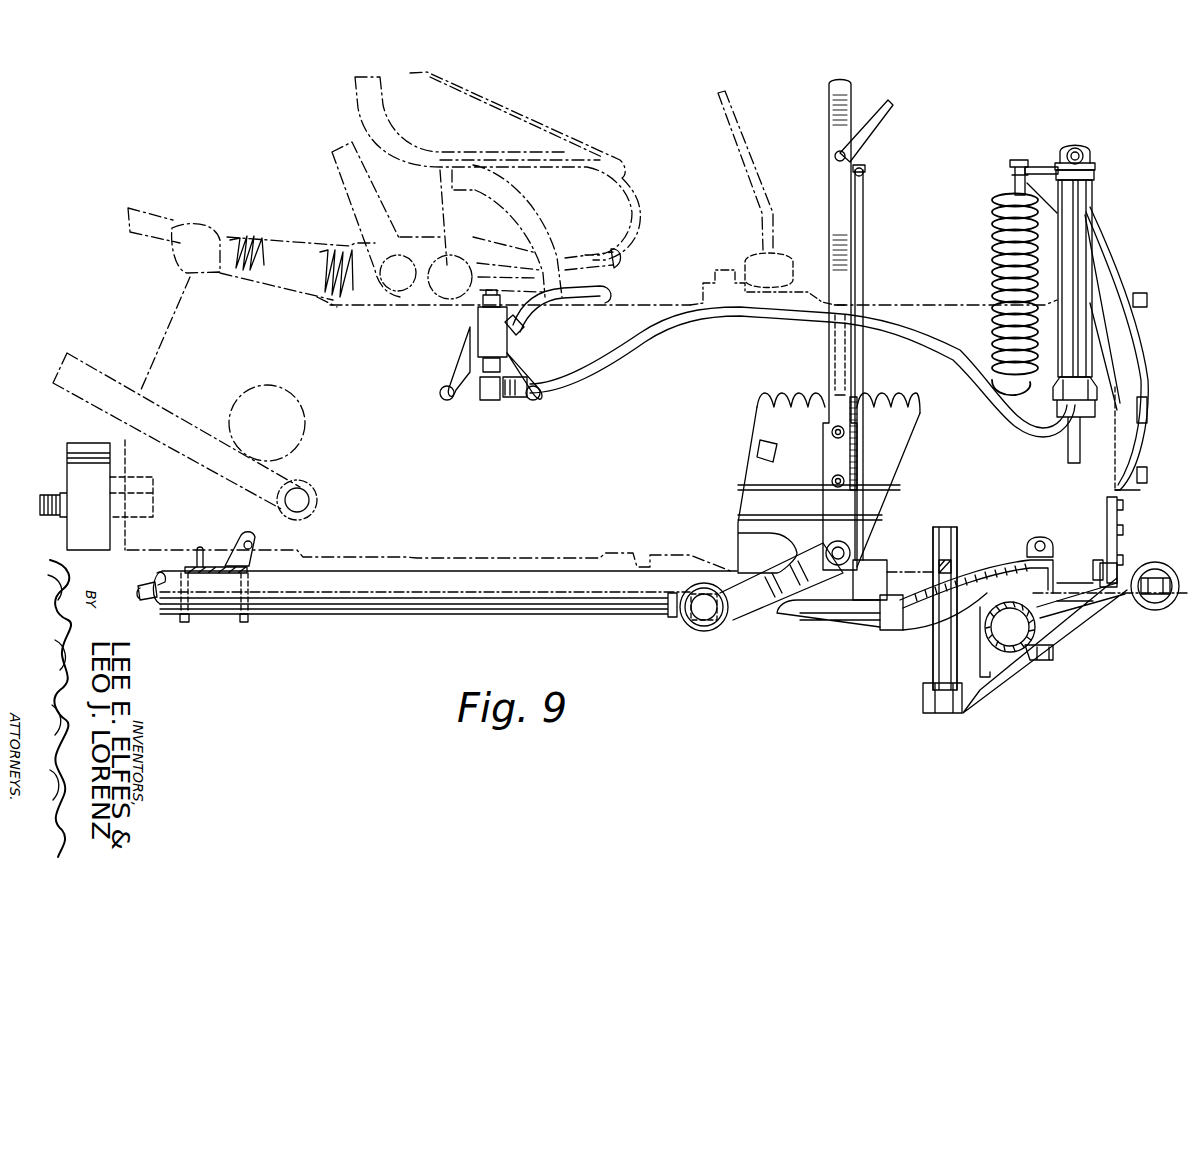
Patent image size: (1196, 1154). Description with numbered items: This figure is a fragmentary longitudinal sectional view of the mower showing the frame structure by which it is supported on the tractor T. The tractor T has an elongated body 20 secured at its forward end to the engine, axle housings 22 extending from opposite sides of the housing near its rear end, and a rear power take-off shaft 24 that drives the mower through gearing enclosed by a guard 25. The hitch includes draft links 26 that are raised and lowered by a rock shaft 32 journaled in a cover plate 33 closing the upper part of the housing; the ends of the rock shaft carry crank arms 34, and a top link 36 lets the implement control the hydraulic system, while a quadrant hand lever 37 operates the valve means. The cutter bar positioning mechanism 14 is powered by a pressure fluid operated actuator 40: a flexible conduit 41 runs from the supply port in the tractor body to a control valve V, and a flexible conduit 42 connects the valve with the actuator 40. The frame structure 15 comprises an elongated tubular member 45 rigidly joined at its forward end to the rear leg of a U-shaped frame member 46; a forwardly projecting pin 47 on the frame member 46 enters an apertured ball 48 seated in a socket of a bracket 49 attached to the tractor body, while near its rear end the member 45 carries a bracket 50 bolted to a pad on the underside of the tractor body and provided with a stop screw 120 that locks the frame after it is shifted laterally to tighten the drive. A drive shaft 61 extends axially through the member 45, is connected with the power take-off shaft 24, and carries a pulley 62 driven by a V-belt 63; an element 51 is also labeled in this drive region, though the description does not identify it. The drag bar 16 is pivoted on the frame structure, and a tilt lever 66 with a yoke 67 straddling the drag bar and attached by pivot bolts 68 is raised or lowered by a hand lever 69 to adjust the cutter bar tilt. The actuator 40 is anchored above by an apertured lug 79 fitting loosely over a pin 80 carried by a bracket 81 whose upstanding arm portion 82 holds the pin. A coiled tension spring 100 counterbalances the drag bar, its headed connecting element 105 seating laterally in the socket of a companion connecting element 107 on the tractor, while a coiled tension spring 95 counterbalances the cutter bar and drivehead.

The cutter bar positioning mechanism 14 is at (1092, 408).
The frame structure 15 is at (478, 605).
The drag bar 16 is at (1085, 620).
The tractor body 20 is at (173, 306).
The axle housings 22 is at (307, 438).
The power take-off shaft 24 is at (752, 200).
The guard 25 is at (84, 458).
The draft links 26 is at (110, 373).
The rock shaft 32 is at (400, 293).
The cover plate 33 is at (352, 300).
The crank arms 34 is at (345, 196).
The top link 36 is at (155, 215).
The hand lever 37 is at (588, 258).
The pressure fluid operated actuator 40 is at (1093, 262).
The flexible conduit 41 is at (588, 300).
The flexible conduit 42 is at (665, 338).
The tubular frame member 45 is at (347, 600).
The U-shaped frame member 46 is at (903, 572).
The pin 47 is at (1147, 567).
The ball 48 is at (1097, 562).
The bracket 49 is at (1120, 523).
The bracket 50 is at (197, 548).
The base 51 is at (1022, 658).
The drive shaft 61 is at (146, 590).
The pulley 62 is at (958, 545).
The V-belt 63 is at (945, 527).
The tilt lever 66 is at (838, 612).
The yoke 67 is at (1000, 562).
The pivot bolts 68 is at (1040, 537).
The hand lever 69 is at (835, 238).
The lug 79 is at (1096, 171).
The pin 80 is at (1080, 145).
The bracket 81 is at (1148, 380).
The arm portion 82 is at (1100, 240).
The coiled tension spring 95 is at (1157, 611).
The coiled tension spring 100 is at (998, 272).
The headed connecting element 105 is at (1013, 185).
The companion connecting element 107 is at (1043, 162).
The stop screw 120 is at (255, 545).
The control valve V is at (470, 334).
The tractor T is at (935, 302).